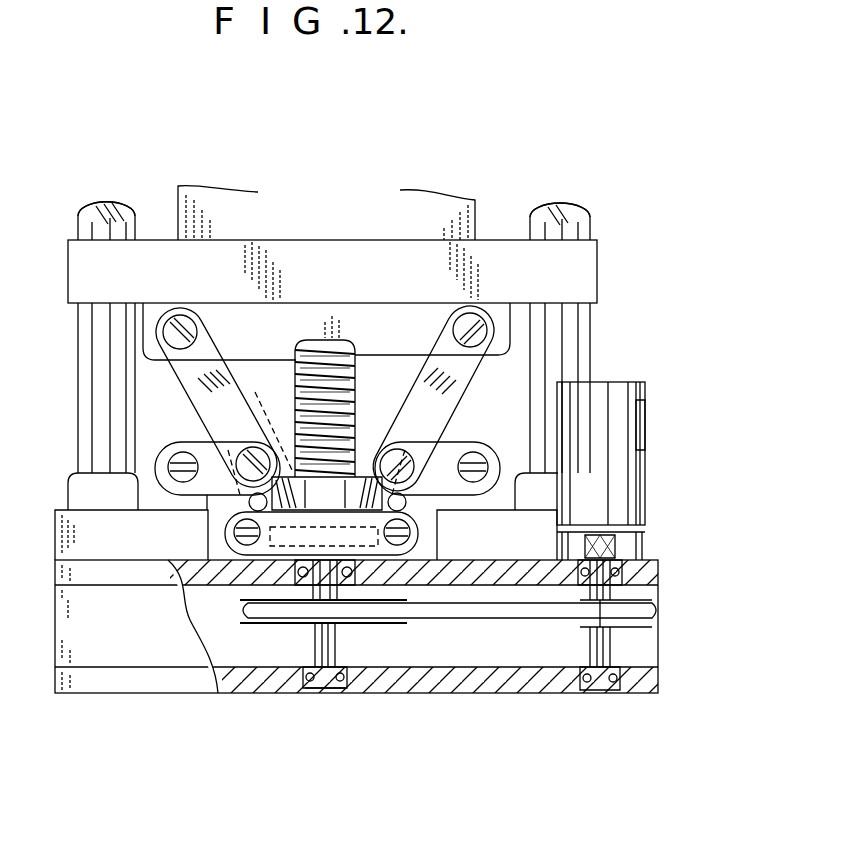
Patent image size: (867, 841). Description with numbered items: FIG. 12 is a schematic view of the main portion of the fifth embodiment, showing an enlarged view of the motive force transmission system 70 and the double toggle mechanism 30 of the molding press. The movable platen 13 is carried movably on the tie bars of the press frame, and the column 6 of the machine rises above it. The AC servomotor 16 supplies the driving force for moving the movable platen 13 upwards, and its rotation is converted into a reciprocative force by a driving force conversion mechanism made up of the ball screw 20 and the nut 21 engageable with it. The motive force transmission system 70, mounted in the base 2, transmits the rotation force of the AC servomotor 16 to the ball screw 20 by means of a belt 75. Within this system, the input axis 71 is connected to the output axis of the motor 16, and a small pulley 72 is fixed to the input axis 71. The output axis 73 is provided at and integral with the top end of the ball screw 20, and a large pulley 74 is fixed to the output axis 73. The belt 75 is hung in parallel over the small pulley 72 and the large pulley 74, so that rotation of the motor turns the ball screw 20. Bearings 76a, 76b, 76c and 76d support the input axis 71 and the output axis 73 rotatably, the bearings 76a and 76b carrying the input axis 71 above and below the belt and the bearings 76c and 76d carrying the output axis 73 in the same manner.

The frame column 6 is at (475, 202).
The movable platen 13 is at (597, 250).
The toggle link mechanism 30 is at (158, 413).
The nut 21 is at (265, 416).
The ball screw 20 is at (352, 415).
The AC servomotor 16 is at (645, 440).
The bearing 76a is at (655, 532).
The base 2 is at (658, 575).
The input axis 71 is at (610, 645).
The bearing 76c is at (242, 693).
The large pulley 74 is at (290, 693).
The bearing 76d is at (355, 693).
The output axis 73 is at (378, 693).
The belt 75 is at (472, 622).
The small pulley 72 is at (547, 622).
The motive force transmission system 70 is at (553, 636).
The bearing 76b is at (637, 693).